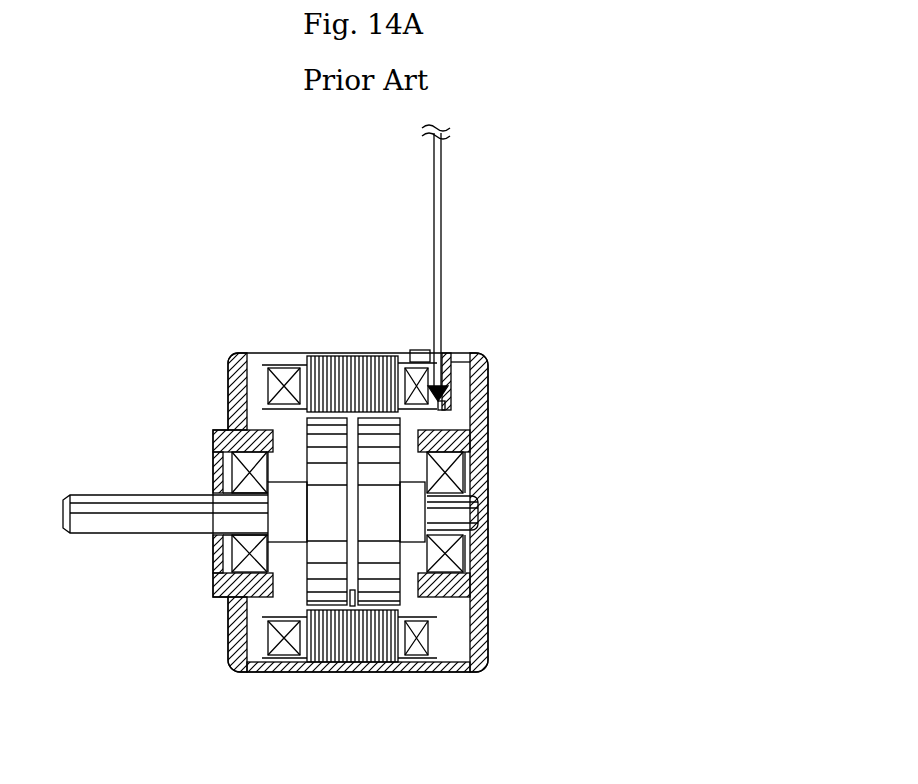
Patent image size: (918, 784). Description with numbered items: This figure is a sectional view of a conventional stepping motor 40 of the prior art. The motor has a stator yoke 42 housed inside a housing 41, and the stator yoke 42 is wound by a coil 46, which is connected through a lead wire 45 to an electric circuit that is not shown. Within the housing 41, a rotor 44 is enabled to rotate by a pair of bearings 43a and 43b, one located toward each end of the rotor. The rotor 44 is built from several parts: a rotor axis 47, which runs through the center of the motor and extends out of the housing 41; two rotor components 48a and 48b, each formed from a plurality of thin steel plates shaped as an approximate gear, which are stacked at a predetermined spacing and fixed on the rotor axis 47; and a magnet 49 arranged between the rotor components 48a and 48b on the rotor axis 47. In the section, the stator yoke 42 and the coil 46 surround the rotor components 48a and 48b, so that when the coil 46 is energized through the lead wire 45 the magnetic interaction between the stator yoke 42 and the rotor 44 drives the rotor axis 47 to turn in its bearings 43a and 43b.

The prior art motor 40 is at (590, 277).
The housing 41 is at (490, 372).
The stator yoke 42 is at (343, 392).
The bearing 43a is at (250, 562).
The bearing 43b is at (455, 552).
The rotor 44 is at (147, 555).
The lead wire 45 is at (441, 222).
The coil 46 is at (288, 385).
The rotor axis 47 is at (160, 508).
The rotor component 48a is at (318, 580).
The rotor component 48b is at (390, 590).
The magnet 49 is at (353, 585).